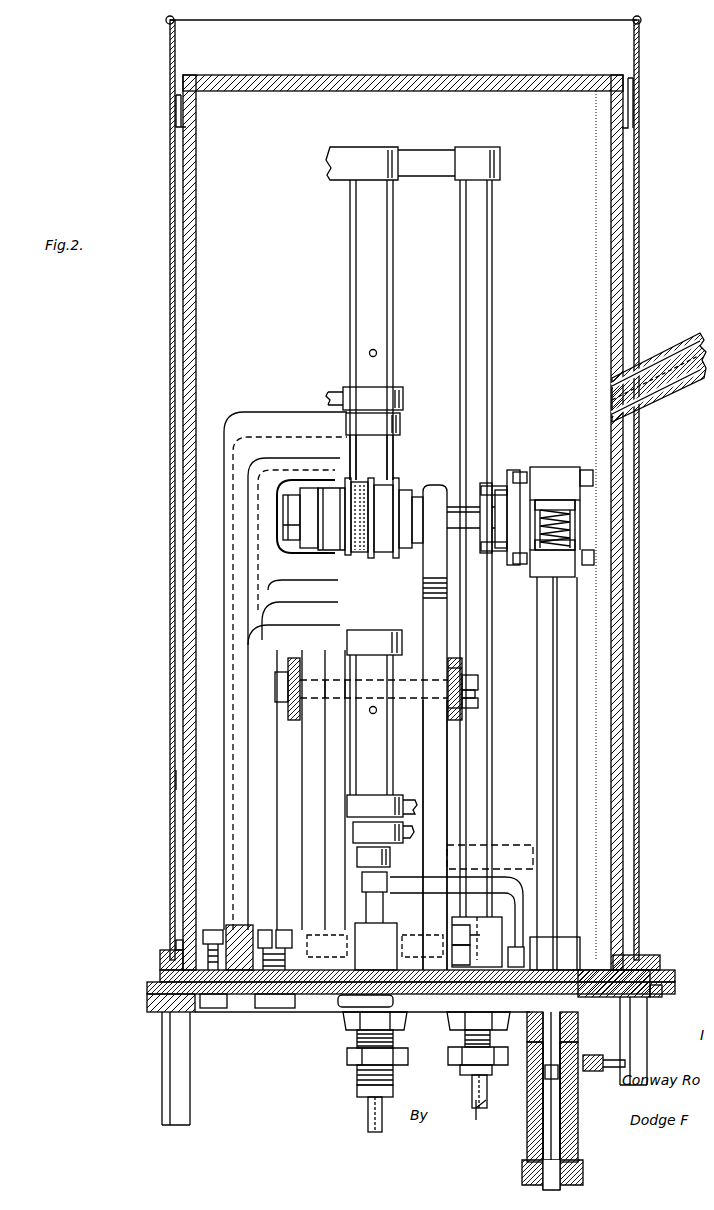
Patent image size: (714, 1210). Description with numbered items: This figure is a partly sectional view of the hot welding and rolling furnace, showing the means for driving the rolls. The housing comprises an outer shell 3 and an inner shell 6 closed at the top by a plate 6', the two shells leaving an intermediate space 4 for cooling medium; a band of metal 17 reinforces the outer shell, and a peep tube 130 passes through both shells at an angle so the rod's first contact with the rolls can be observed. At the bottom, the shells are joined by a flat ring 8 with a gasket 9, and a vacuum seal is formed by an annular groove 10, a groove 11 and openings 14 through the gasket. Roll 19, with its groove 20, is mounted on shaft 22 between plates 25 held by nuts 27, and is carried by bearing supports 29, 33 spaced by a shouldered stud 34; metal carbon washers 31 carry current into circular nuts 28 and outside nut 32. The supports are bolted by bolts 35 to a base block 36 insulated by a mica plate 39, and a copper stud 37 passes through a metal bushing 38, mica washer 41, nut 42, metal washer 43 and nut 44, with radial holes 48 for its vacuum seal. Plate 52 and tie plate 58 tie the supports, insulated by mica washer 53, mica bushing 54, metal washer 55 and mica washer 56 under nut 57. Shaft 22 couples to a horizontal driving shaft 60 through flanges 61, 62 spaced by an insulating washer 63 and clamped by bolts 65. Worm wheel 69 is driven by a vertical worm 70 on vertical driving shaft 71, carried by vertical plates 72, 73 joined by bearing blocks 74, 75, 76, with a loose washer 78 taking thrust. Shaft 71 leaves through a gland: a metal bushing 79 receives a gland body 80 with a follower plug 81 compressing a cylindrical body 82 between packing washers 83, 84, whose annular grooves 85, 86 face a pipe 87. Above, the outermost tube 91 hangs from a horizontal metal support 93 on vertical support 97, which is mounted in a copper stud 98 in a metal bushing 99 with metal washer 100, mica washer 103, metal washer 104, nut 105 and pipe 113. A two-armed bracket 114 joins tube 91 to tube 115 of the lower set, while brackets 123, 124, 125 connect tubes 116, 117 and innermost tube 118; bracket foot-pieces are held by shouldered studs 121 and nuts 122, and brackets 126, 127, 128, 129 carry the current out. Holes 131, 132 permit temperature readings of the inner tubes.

The outer shell 3 is at (170, 48).
The intermediate space 4 is at (176, 775).
The inner shell 6 is at (394, 522).
The plate 6' is at (403, 65).
The flat ring 8 is at (160, 958).
The gasket 9 is at (150, 965).
The annular groove 10 is at (178, 942).
The groove 11 is at (160, 978).
The openings 14 is at (160, 1005).
The band of metal 17 is at (176, 110).
The roll 19 is at (372, 490).
The groove 20 is at (380, 507).
The shaft 22 is at (347, 548).
The plate 25 is at (345, 480).
The nut 27 is at (333, 508).
The circular nuts 28 is at (300, 495).
The bearing support 29 is at (434, 485).
The washers 31 is at (408, 492).
The outside nut 32 is at (290, 540).
The bearing support 33 is at (310, 548).
The shouldered stud 34 is at (343, 690).
The bolts 35 is at (455, 932).
The base block 36 is at (350, 930).
The copper stud 37 is at (360, 1090).
The metal bushing 38 is at (345, 1005).
The mica plate 39 is at (272, 1010).
The washer 41 is at (355, 1016).
The nut 42 is at (358, 1036).
The metal washer 43 is at (350, 1055).
The nut 44 is at (360, 1072).
The radial holes 48 is at (368, 1110).
The plate 52 is at (462, 662).
The mica washer 53 is at (448, 663).
The mica bushing 54 is at (448, 705).
The metal washer 55 is at (478, 681).
The mica washer 56 is at (478, 707).
The nut 57 is at (475, 695).
The tie plate 58 is at (292, 720).
The horizontal driving shaft 60 is at (517, 564).
The flange 61 is at (500, 490).
The flange 62 is at (515, 470).
The insulating washer 63 is at (484, 552).
The bolts 65 is at (484, 483).
The worm wheel 69 is at (570, 500).
The worm 70 is at (575, 540).
The vertical driving shaft 71 is at (553, 613).
The vertical plate 72 is at (577, 765).
The vertical plate 73 is at (447, 758).
The bearing block 74 is at (560, 945).
The bearing block 75 is at (566, 565).
The bearing block 76 is at (560, 467).
The loose washer 78 is at (552, 500).
The metal bushing 79 is at (588, 1000).
The gland body 80 is at (630, 1000).
The follower plug 81 is at (522, 1172).
The cylindrical body 82 is at (527, 1092).
The packing washers 83 is at (527, 1040).
The packing washers 84 is at (527, 1120).
The annular groove 85 is at (543, 1075).
The annular groove 86 is at (603, 1062).
The pipe 87 is at (610, 1068).
The tube 91 is at (393, 250).
The horizontal metal support 93 is at (432, 150).
The vertical support 97 is at (492, 238).
The copper stud 98 is at (472, 1085).
The metal bushing 99 is at (460, 1016).
The metal washer 100 is at (472, 968).
The mica washer 103 is at (466, 1036).
The metal washer 104 is at (452, 1058).
The nut 105 is at (462, 1072).
The pipe 113 is at (475, 1107).
The two-armed bracket 114 is at (338, 390).
The tube 115 is at (374, 712).
The tube 116 is at (358, 832).
The tube 117 is at (360, 860).
The tube 118 is at (362, 885).
The shouldered studs 121 is at (213, 1008).
The nuts 122 is at (210, 930).
The bracket 123 is at (224, 470).
The bracket 124 is at (265, 590).
The bracket 125 is at (283, 548).
The bracket 126 is at (408, 796).
The bracket 127 is at (405, 840).
The bracket 128 is at (490, 857).
The bracket 129 is at (457, 920).
The peep tube 130 is at (668, 338).
The hole 131 is at (378, 352).
The hole 132 is at (374, 714).